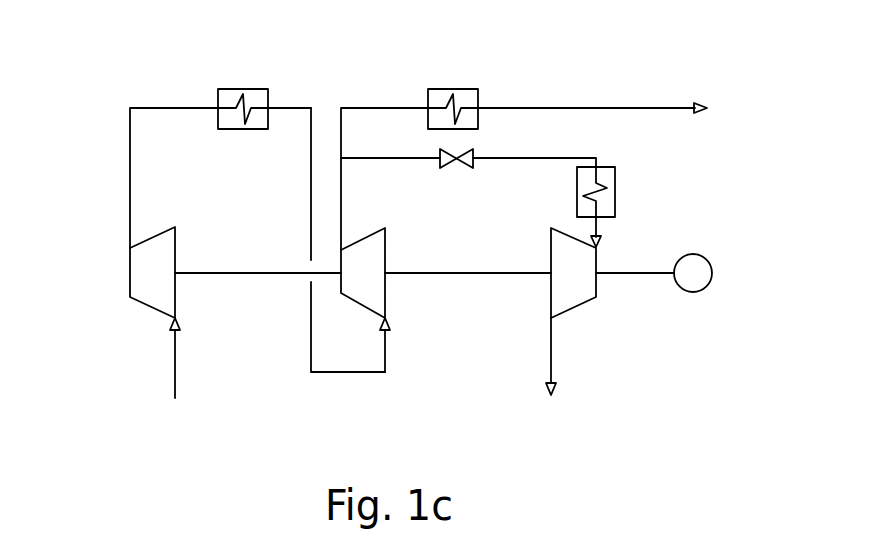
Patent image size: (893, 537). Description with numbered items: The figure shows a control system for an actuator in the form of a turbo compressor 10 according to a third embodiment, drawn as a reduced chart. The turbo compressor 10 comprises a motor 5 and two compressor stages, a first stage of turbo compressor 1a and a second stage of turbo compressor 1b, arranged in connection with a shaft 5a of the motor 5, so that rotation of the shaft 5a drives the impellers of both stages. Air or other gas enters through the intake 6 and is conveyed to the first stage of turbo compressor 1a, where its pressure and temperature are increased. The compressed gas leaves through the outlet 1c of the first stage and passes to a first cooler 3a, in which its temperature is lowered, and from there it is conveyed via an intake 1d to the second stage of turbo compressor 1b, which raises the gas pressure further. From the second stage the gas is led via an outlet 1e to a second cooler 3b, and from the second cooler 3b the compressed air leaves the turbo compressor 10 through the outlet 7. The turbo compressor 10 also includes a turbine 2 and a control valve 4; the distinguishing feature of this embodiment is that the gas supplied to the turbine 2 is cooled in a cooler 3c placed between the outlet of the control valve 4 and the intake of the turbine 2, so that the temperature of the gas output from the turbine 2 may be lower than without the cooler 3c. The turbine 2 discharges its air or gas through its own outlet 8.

The turbo compressor 10 is at (672, 53).
The first stage of turbo compressor 1a is at (130, 280).
The second stage of turbo compressor 1b is at (387, 293).
The outlet of the first stage of turbo compressor 1c is at (130, 242).
The intake 1d is at (388, 333).
The outlet 1e is at (343, 244).
The turbine 2 is at (551, 293).
The first cooler 3a is at (218, 121).
The second cooler 3b is at (428, 99).
The cooler 3c is at (616, 198).
The control valve 4 is at (456, 165).
The motor 5 is at (713, 268).
The shaft 5a is at (650, 278).
The intake 6 is at (172, 382).
The outlet 7 is at (701, 116).
The outlet 8 is at (548, 380).